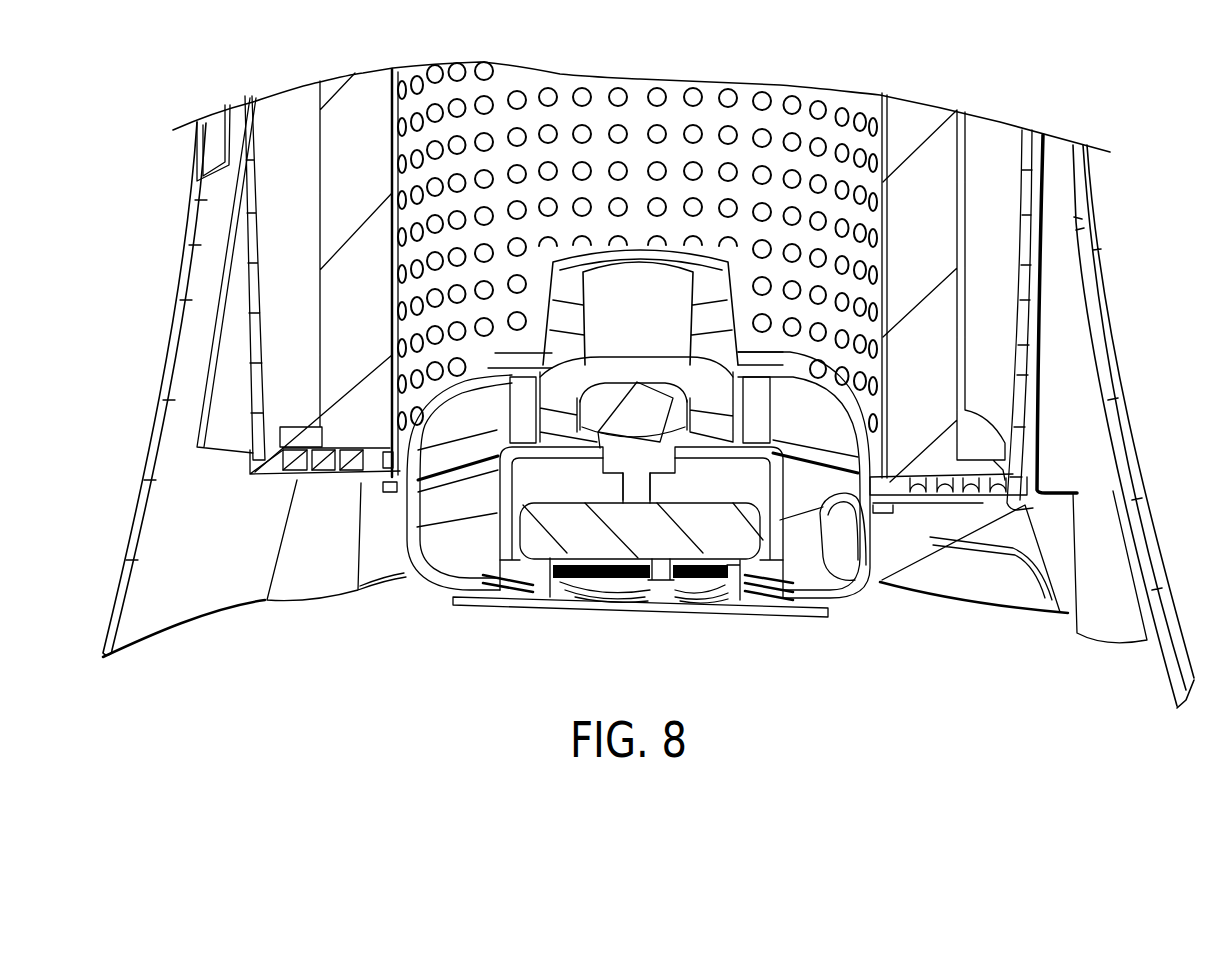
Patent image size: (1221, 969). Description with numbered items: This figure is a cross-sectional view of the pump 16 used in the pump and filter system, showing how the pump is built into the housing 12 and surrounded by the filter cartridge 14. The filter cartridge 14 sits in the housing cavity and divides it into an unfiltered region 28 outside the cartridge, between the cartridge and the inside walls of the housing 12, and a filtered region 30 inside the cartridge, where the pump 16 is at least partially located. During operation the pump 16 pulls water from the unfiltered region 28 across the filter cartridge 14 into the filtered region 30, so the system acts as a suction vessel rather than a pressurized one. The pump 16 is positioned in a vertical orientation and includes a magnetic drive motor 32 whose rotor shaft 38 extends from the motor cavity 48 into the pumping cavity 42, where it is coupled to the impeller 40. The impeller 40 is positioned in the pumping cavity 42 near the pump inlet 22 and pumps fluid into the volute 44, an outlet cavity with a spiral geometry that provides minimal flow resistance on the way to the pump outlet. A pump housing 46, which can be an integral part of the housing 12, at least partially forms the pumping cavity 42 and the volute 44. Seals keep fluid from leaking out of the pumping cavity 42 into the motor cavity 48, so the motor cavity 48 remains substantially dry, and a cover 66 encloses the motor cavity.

The housing 12 is at (1097, 173).
The filter cartridge 14 is at (920, 218).
The pump 16 is at (443, 370).
The pump inlet 22 is at (652, 312).
The unfiltered region 28 is at (996, 350).
The filtered region 30 is at (808, 280).
The magnetic drive motor 32 is at (772, 580).
The rotor shaft 38 is at (638, 473).
The impeller 40 is at (683, 385).
The pumping cavity 42 is at (640, 408).
The volute 44 is at (443, 502).
The pump housing 46 is at (850, 424).
The motor cavity 48 is at (520, 559).
The cover 66 is at (585, 582).